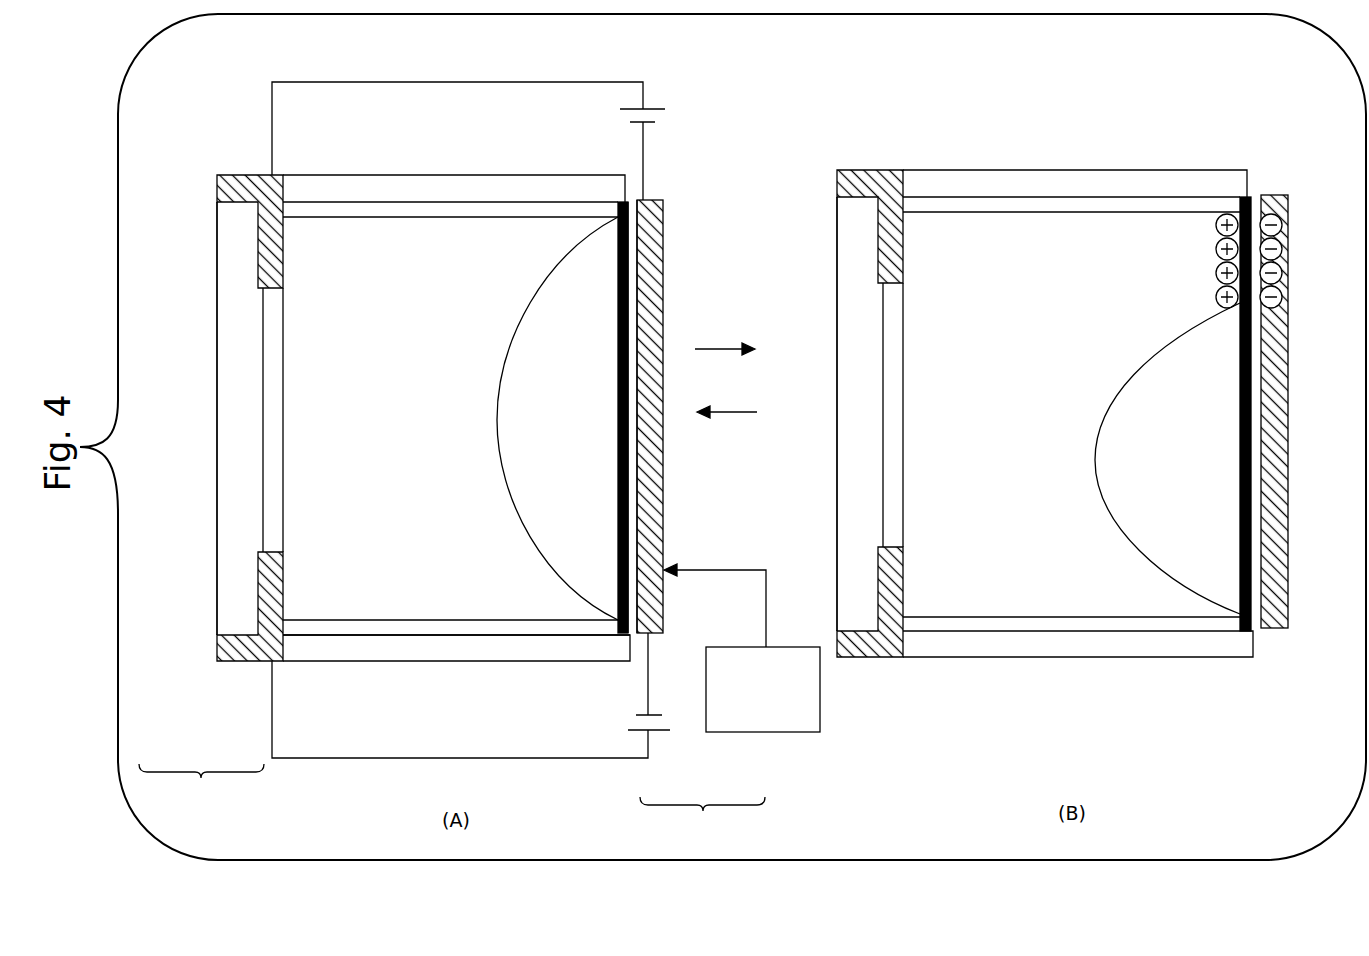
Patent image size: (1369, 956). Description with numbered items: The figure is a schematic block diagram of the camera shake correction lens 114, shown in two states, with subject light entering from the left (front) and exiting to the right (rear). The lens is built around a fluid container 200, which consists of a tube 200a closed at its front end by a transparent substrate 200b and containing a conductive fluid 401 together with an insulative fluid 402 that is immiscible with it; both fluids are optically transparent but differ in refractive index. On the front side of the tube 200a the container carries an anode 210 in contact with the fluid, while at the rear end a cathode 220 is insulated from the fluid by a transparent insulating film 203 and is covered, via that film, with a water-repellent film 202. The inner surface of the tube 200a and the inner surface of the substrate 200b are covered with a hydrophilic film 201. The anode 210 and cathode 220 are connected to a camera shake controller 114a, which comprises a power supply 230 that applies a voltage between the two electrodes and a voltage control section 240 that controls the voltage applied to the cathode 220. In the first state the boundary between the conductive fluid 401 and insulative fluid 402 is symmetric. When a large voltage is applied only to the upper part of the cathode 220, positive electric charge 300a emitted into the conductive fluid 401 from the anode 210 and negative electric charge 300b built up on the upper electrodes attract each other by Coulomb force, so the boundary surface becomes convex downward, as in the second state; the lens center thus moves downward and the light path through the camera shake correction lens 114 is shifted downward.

The camera shake correction lens 114 is at (740, 149).
The camera shake controller 114a is at (702, 816).
The fluid container 200 is at (937, 643).
The tube 200a is at (355, 648).
The transparent substrate 200b is at (240, 612).
The hydrophilic film 201 is at (385, 627).
The water-repellent film 202 is at (630, 490).
The transparent insulating film 203 is at (632, 452).
The anode 210 is at (242, 175).
The cathode 220 is at (655, 236).
The power supply 230 is at (657, 107).
The voltage control section 240 is at (740, 733).
The positive electric charge 300a is at (1228, 212).
The negative electric charge 300b is at (1283, 196).
The conductive fluid 401 is at (470, 586).
The insulative fluid 402 is at (567, 563).